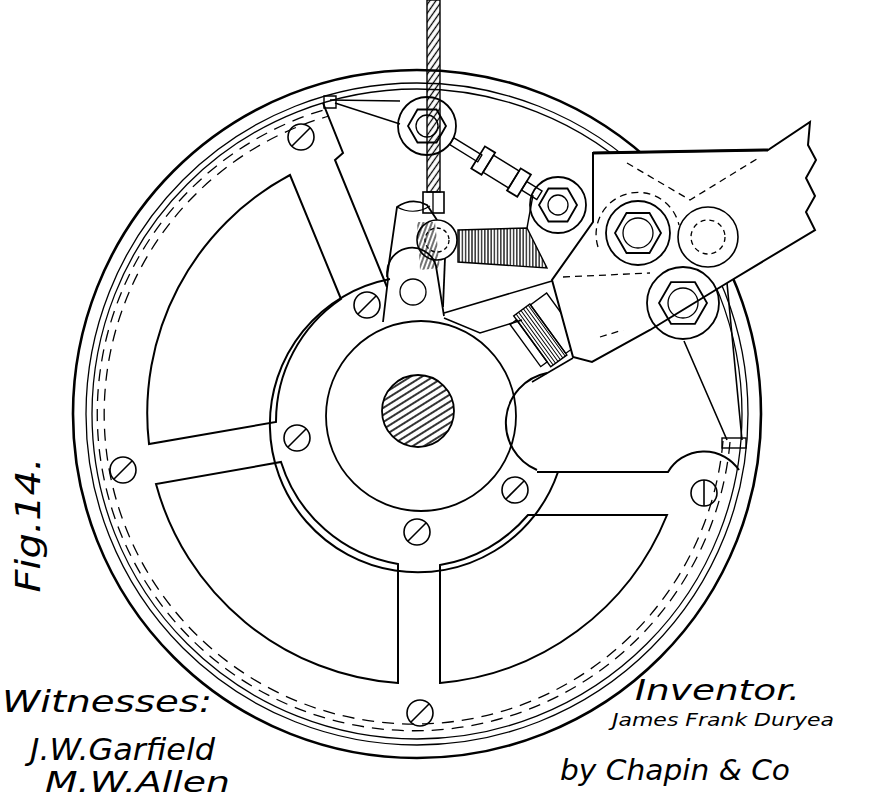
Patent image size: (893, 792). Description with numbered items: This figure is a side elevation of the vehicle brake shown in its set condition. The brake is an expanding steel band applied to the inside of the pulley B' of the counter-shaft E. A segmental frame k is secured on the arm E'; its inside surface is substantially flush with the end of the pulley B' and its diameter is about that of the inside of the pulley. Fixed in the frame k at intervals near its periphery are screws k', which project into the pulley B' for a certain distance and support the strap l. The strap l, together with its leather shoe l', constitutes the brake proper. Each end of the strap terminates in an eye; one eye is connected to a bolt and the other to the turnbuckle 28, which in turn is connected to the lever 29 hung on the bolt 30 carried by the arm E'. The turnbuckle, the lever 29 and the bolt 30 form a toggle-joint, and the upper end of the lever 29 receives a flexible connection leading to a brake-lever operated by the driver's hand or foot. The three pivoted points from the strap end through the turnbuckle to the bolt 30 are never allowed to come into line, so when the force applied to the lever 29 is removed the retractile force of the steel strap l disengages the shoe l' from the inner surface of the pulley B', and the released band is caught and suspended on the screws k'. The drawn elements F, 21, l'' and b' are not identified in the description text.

The segmental frame k is at (417, 414).
The screws k' is at (413, 425).
The counter-shaft E is at (433, 396).
The arm E' is at (684, 242).
The brake operating arm F is at (396, 234).
The turnbuckle 28 is at (492, 165).
The lever 29 is at (506, 231).
The bolt 30 is at (537, 132).
The bolt 21 is at (683, 303).
The strap l is at (413, 381).
The leather shoe l' is at (365, 66).
The band anchor arm l'' is at (738, 362).
The pulley B' is at (331, 68).
The band anchor tab b' is at (755, 471).